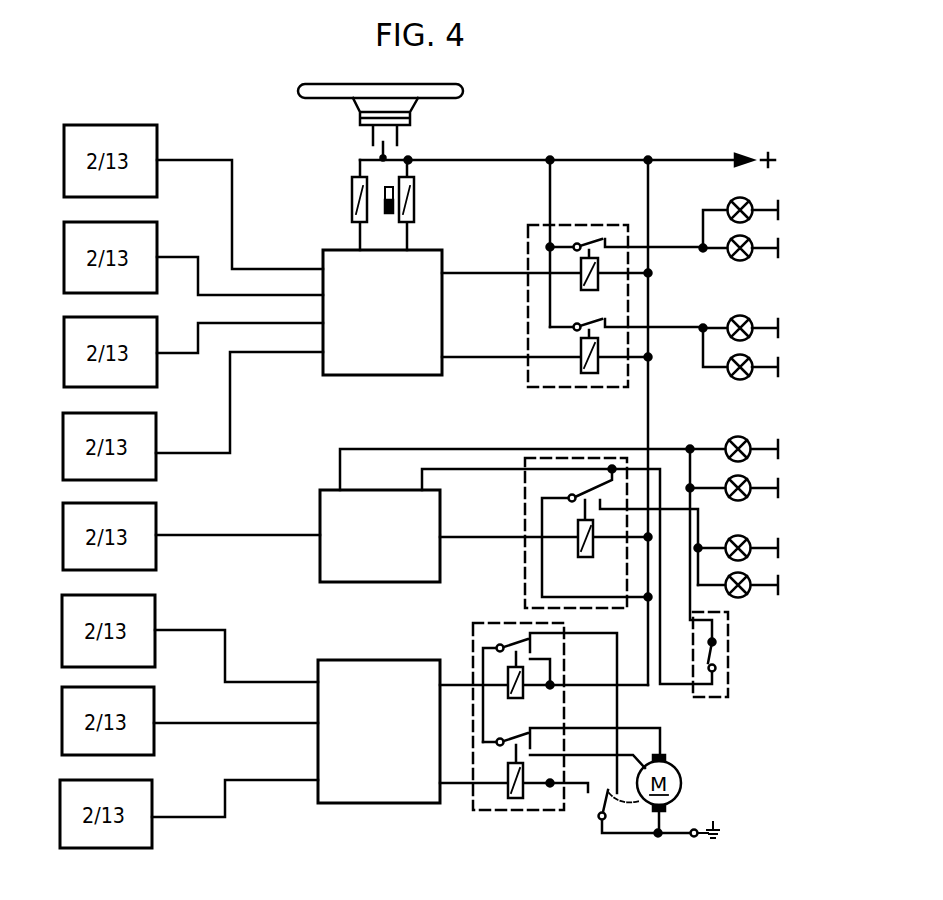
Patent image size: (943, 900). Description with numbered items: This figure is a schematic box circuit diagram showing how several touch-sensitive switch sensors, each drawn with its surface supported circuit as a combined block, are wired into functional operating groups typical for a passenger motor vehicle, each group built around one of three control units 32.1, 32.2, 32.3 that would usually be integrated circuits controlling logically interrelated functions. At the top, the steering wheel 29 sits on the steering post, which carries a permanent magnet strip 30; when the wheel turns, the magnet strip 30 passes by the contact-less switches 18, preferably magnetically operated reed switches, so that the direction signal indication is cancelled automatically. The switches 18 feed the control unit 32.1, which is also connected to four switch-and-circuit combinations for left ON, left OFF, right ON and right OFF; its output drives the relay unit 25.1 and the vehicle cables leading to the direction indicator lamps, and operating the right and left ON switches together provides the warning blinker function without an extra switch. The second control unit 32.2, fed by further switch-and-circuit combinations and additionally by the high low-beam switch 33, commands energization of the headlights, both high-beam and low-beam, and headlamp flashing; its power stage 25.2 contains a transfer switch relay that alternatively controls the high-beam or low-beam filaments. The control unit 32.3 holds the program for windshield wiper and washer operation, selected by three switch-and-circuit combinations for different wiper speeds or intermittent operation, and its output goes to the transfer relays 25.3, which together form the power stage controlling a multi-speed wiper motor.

The steering wheel 29 is at (466, 92).
The contact-less switches 18 is at (352, 204).
The permanent magnet strip 30 is at (385, 207).
The control unit 32.1 is at (382, 312).
The second control unit 32.2 is at (380, 536).
The control unit 32.3 is at (379, 731).
The relay unit 25.1 is at (527, 254).
The power stage 25.2 is at (525, 522).
The relays 25.3 is at (496, 623).
The high low-beam switch 33 is at (728, 663).